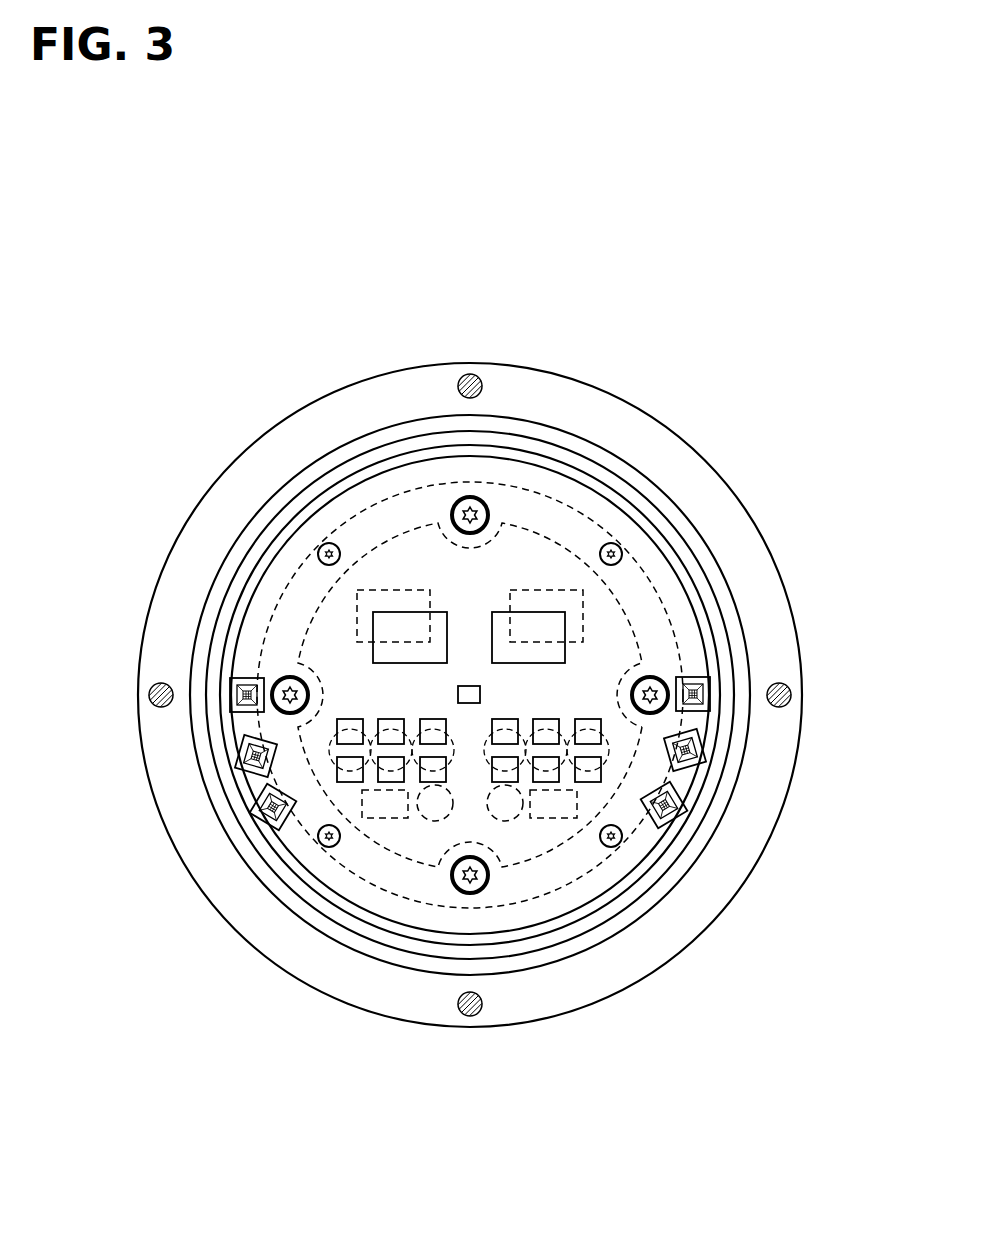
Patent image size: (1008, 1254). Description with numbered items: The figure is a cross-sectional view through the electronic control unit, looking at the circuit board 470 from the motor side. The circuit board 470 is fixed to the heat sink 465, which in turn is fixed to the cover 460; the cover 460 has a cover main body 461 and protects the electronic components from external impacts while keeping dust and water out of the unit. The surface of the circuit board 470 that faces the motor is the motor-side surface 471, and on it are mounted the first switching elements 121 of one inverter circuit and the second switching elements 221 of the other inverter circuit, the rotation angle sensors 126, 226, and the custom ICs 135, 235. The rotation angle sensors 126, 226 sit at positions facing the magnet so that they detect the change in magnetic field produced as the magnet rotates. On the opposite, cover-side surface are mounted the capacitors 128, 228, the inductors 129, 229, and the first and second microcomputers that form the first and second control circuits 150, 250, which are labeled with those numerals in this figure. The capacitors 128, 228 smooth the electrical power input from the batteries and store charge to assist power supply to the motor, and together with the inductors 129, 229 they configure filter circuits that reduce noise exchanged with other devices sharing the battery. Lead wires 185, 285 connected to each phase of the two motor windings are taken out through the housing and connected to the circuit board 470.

The cover 460 is at (310, 402).
The cover main body 461 is at (253, 453).
The circuit board 470 is at (560, 470).
The heat sink 465 is at (597, 523).
The motor-side surface 471 is at (635, 540).
The rotation angle sensor 126 is at (421, 490).
The rotation angle sensor 226 is at (468, 686).
The first control circuit 150 is at (357, 603).
The custom IC 135 is at (373, 650).
The second control circuit 250 is at (583, 603).
The custom IC 235 is at (565, 650).
The lead wire 185 is at (230, 685).
The lead wire 285 is at (712, 690).
The capacitor 128 is at (338, 752).
The capacitor 228 is at (602, 757).
The first switching element 121 is at (338, 782).
The second switching element 221 is at (602, 782).
The inductor 129 is at (382, 819).
The inductor 229 is at (553, 819).